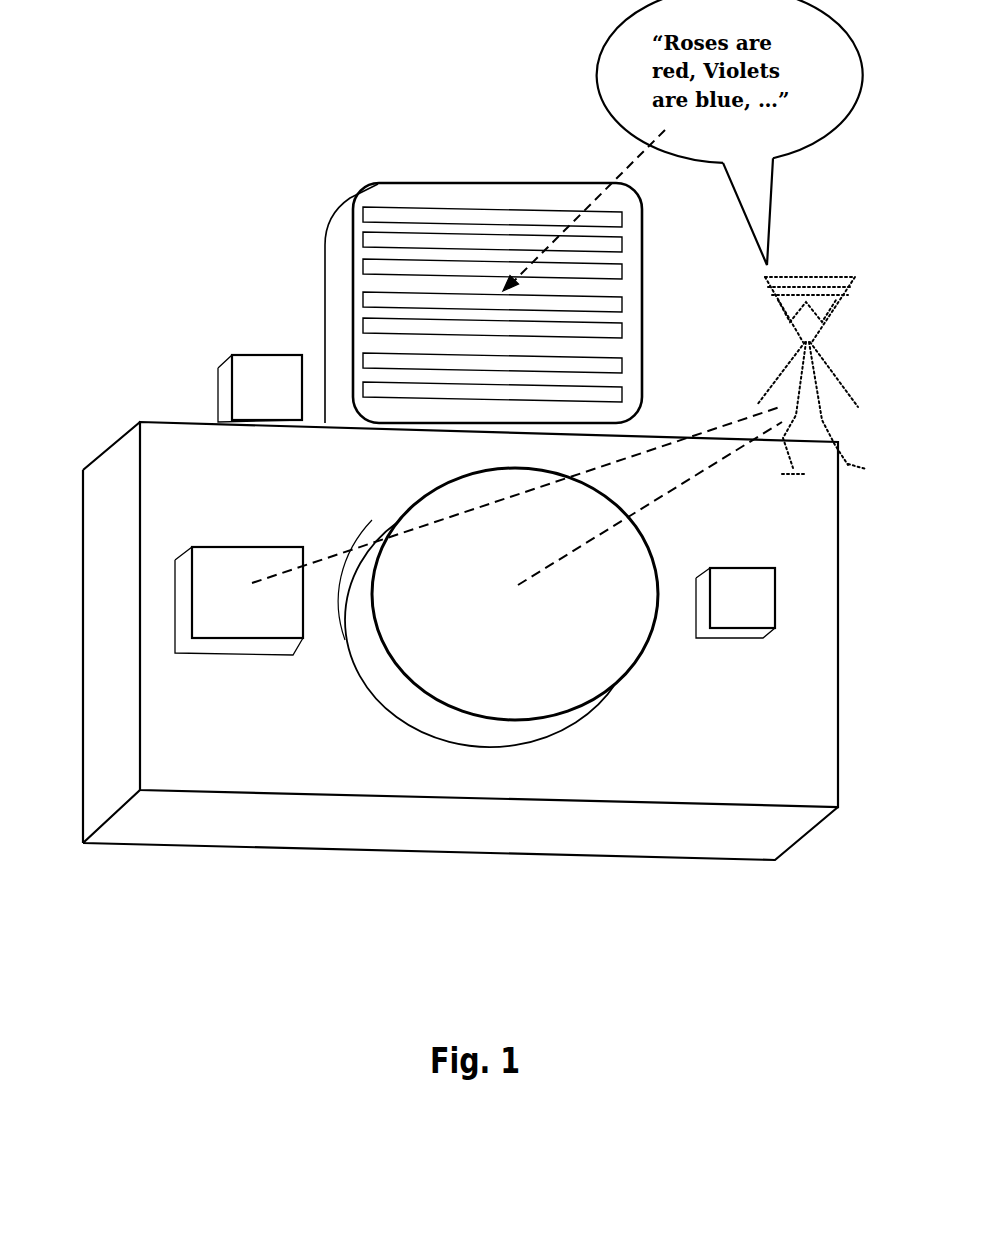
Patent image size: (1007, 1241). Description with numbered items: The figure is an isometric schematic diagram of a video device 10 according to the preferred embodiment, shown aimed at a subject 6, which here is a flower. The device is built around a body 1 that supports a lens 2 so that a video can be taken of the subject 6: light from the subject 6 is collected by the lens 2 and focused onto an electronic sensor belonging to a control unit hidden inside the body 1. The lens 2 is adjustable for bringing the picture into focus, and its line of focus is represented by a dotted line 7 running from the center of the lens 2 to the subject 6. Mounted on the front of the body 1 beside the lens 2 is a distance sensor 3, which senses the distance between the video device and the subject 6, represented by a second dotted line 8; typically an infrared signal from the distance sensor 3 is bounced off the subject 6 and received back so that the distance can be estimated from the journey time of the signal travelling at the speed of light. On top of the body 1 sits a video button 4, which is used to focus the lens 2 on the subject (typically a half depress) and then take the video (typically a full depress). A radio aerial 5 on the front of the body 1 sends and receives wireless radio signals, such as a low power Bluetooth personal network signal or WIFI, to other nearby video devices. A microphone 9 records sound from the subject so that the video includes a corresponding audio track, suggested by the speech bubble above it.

The video device 10 is at (187, 165).
The body 1 is at (140, 422).
The lens 2 is at (503, 693).
The distance sensor 3 is at (233, 627).
The video button 4 is at (243, 375).
The radio aerial 5 is at (740, 628).
The subject 6 is at (732, 317).
The dotted line (line of focus) 7 is at (643, 508).
The dotted line (distance) 8 is at (362, 682).
The microphone 9 is at (517, 183).